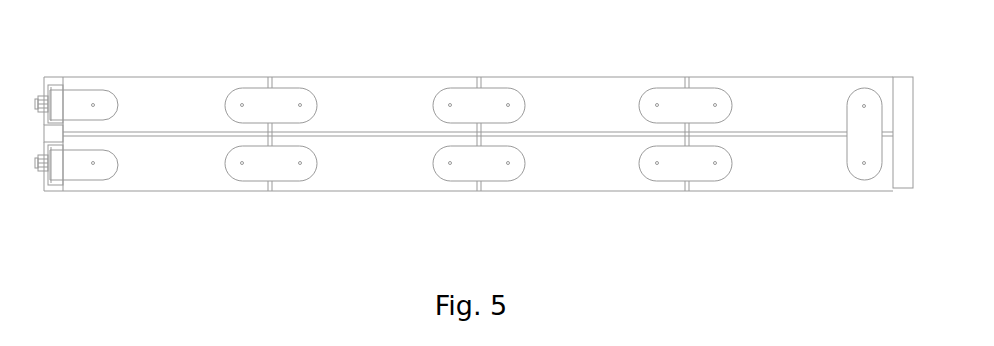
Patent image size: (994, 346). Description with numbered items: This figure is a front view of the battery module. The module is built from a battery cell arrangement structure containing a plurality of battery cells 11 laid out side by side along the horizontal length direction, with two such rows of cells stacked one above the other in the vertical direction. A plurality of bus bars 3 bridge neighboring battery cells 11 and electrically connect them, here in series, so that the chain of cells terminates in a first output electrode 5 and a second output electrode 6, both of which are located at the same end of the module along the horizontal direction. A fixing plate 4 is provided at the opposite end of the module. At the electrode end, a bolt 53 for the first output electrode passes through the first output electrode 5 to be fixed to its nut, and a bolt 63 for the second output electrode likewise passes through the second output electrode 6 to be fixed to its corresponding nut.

The battery cell 11 is at (160, 100).
The bus bar 3 is at (292, 100).
The fixing plate 4 is at (899, 94).
The first output electrode 5 is at (103, 106).
The second output electrode 6 is at (103, 163).
The bolt for the first output electrode 53 is at (43, 95).
The bolt for the second output electrode 63 is at (43, 172).